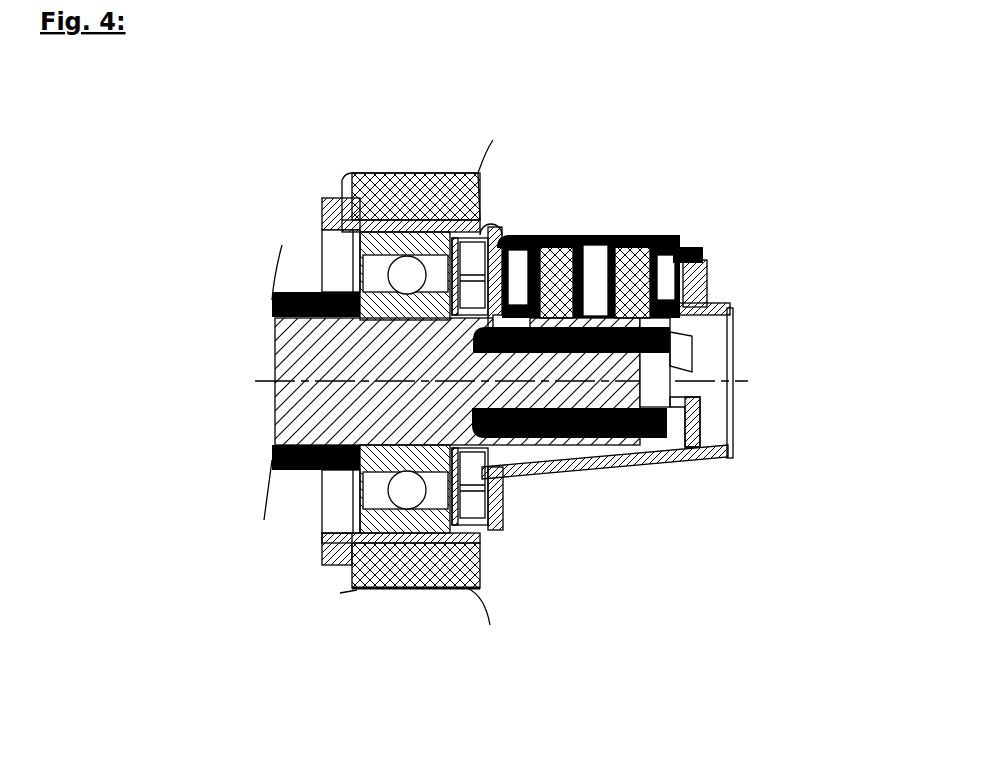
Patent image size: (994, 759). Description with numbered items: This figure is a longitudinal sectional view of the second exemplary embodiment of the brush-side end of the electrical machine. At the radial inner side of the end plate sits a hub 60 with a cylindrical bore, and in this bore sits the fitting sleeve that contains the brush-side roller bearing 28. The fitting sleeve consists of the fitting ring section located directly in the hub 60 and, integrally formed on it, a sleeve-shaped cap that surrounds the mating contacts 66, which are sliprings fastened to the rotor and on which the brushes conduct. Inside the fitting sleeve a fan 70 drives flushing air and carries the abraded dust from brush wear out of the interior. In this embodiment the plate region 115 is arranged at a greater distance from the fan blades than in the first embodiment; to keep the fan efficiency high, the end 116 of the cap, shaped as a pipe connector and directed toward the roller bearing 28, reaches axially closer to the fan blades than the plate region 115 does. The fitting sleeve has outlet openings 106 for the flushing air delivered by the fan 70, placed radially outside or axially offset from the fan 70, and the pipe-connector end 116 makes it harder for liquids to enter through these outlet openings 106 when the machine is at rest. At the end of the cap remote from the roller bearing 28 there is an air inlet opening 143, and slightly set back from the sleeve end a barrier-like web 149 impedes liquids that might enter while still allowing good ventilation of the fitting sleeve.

The brush-side roller bearing 28 is at (320, 257).
The hub 60 is at (353, 570).
The fan 70 is at (495, 537).
The outlet openings 106 is at (507, 217).
The air inlet opening 143 is at (738, 348).
The mating contacts 66 is at (657, 440).
The barrier-like web 149 is at (692, 423).
The end of the sleeve-shaped cap 116 is at (505, 508).
The plate region 115 is at (513, 513).